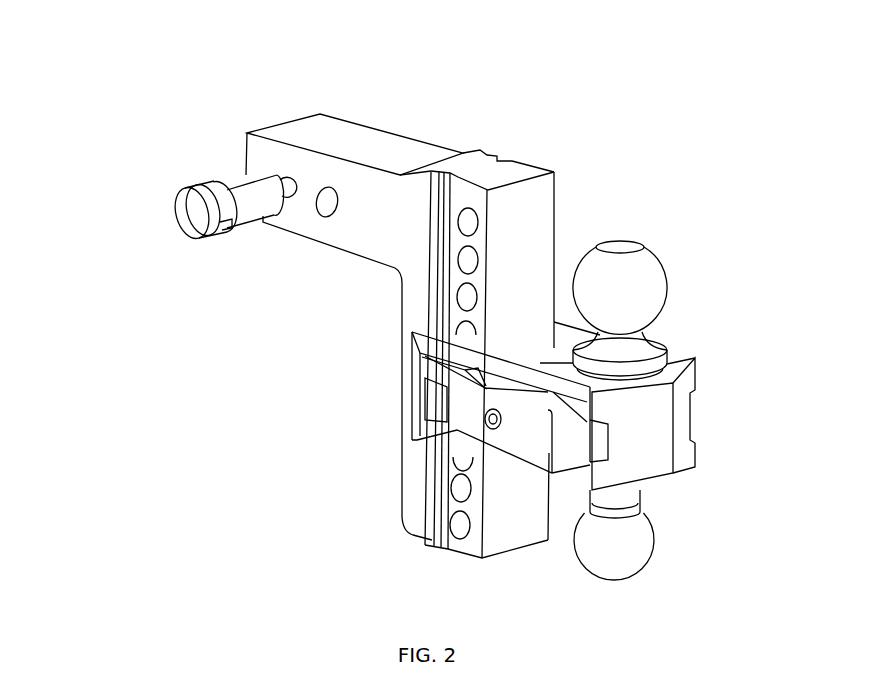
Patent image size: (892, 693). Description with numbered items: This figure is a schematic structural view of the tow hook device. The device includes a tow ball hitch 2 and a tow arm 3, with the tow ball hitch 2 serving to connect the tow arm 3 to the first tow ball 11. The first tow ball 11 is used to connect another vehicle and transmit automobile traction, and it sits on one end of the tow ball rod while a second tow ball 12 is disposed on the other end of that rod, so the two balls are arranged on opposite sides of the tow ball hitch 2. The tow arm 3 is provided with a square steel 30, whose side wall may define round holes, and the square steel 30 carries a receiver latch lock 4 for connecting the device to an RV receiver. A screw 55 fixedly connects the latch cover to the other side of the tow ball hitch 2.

The tow ball hitch 2 is at (538, 430).
The tow arm 3 is at (412, 265).
The receiver latch lock 4 is at (193, 214).
The first tow ball 11 is at (618, 283).
The second tow ball 12 is at (640, 547).
The square steel 30 is at (407, 145).
The screw 55 is at (490, 426).